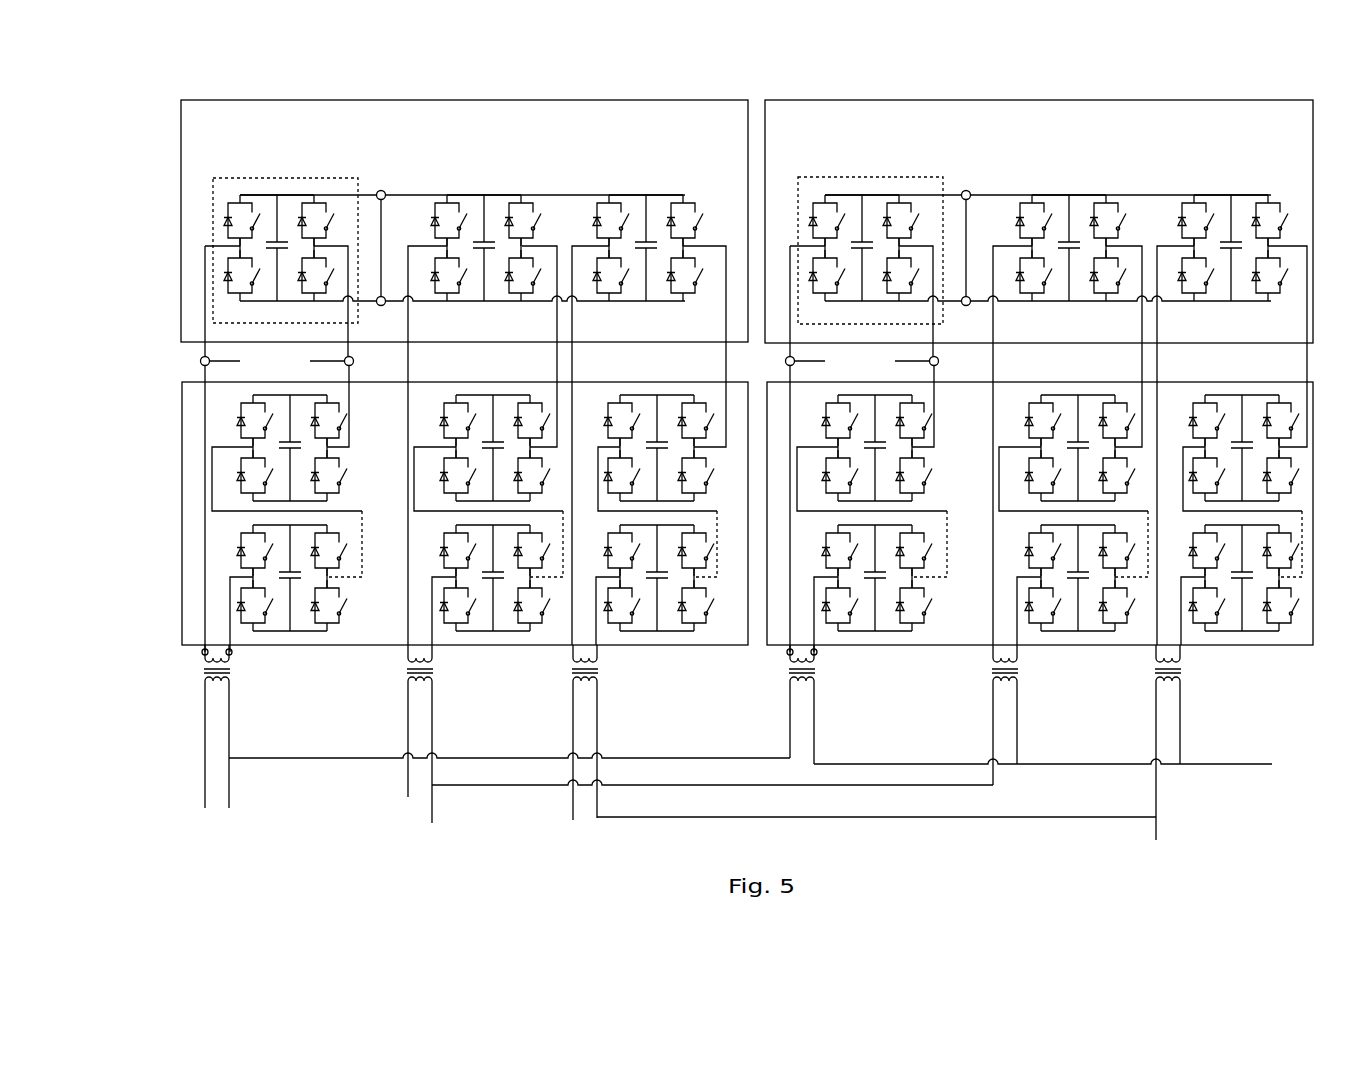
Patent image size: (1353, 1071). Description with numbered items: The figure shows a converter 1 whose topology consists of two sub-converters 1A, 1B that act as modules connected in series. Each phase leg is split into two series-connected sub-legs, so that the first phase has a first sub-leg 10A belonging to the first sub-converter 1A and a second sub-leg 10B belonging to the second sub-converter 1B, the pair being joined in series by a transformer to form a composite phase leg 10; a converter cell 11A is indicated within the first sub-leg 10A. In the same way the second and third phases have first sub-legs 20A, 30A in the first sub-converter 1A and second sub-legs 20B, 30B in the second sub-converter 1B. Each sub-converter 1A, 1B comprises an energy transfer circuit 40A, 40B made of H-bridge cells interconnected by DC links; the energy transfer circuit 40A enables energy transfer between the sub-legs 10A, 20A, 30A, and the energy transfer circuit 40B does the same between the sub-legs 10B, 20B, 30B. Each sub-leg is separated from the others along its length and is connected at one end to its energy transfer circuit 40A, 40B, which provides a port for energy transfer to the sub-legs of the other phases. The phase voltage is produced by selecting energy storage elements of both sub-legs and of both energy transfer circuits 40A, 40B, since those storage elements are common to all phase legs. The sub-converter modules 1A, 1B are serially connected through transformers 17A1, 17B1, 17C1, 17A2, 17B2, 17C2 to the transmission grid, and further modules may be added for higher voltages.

The converter 1 is at (238, 78).
The first sub-converter 1A is at (150, 303).
The second sub-converter 1B is at (938, 96).
The composite phase leg 10 is at (297, 700).
The first sub-leg 10A is at (173, 645).
The second sub-leg 10B is at (945, 655).
The converter cell 11A is at (206, 387).
The transformer 17A1 is at (201, 669).
The transformer 17B1 is at (436, 671).
The transformer 17C1 is at (601, 671).
The transformer 17A2 is at (786, 669).
The transformer 17B2 is at (1021, 671).
The transformer 17C2 is at (1184, 671).
The first sub-leg of second phase leg 20A is at (495, 376).
The first sub-leg of third phase leg 30A is at (658, 376).
The second sub-leg of second phase leg 20B is at (1080, 376).
The second sub-leg of third phase leg 30B is at (1240, 376).
The energy transfer circuit 40A is at (464, 221).
The energy transfer circuit 40B is at (1039, 221).